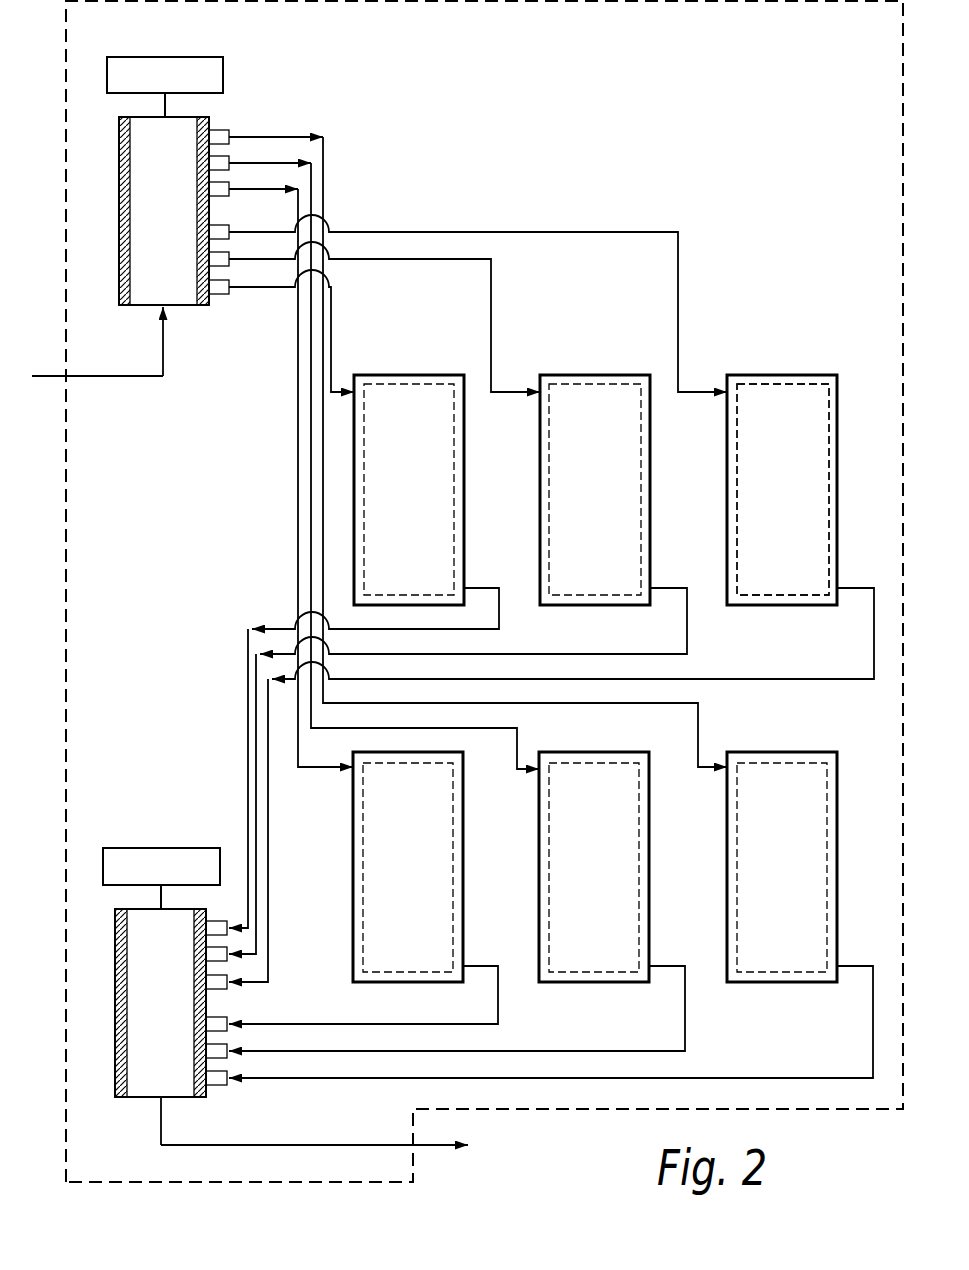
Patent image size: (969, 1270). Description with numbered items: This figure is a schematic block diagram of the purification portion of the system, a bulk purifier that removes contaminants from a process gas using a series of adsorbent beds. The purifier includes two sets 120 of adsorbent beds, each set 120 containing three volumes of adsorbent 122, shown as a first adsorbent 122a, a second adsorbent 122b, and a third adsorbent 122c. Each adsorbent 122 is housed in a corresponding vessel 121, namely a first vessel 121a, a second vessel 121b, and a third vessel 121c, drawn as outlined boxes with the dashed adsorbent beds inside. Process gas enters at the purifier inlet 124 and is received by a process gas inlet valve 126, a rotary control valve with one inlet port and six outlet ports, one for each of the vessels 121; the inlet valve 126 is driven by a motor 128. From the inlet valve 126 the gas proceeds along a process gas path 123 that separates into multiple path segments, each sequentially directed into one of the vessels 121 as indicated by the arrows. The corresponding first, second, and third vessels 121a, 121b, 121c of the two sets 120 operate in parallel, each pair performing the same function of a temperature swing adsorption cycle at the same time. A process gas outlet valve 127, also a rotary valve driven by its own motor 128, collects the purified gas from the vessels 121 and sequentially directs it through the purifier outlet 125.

The set of adsorbent beds 120 is at (736, 136).
The vessel 121 is at (594, 609).
The first vessel 121a is at (407, 646).
The second vessel 121b is at (594, 646).
The third vessel 121c is at (781, 646).
The adsorbent 122 is at (860, 390).
The first adsorbent 122a is at (454, 497).
The second adsorbent 122b is at (641, 497).
The third adsorbent 122c is at (829, 497).
The process gas path 123 is at (163, 340).
The purifier inlet 124 is at (43, 378).
The purifier outlet 125 is at (420, 1147).
The process gas inlet valve 126 is at (209, 121).
The process gas outlet valve 127 is at (115, 1033).
The motor 128 is at (160, 57).